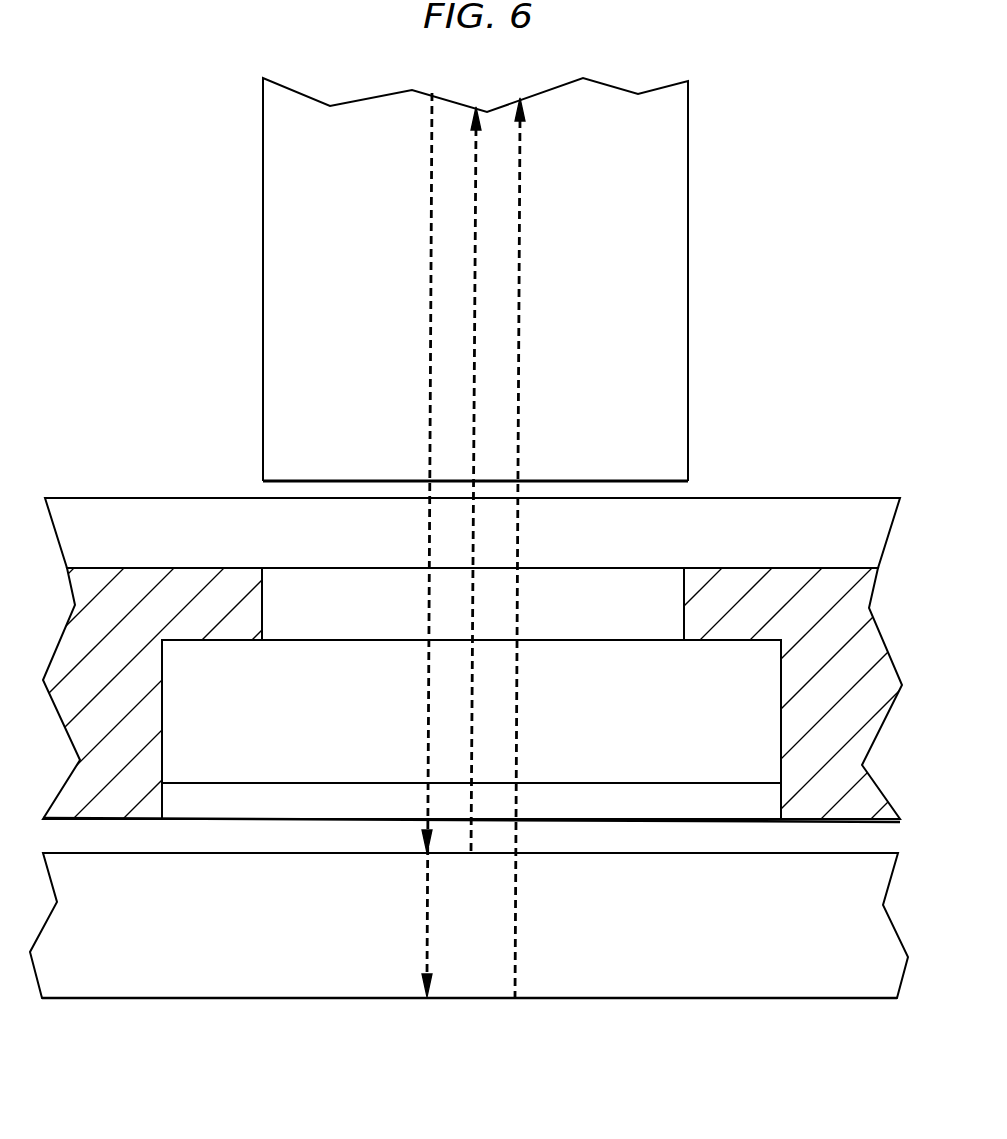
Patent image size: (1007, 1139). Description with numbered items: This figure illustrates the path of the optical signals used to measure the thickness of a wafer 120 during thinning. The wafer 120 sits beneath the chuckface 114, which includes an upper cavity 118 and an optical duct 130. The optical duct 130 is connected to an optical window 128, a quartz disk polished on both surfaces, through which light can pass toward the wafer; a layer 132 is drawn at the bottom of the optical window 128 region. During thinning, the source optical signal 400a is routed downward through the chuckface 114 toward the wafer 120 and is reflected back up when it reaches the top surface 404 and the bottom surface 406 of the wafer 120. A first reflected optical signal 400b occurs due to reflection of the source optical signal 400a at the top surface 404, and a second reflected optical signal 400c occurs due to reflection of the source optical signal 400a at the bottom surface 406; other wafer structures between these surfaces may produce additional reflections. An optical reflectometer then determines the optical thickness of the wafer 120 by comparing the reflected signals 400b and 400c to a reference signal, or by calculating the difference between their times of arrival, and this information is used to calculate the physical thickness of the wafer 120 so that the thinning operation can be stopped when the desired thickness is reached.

The chuckface 114 is at (142, 577).
The upper cavity 118 is at (768, 508).
The wafer 120 is at (750, 990).
The optical window 128 is at (625, 655).
The optical duct 130 is at (305, 583).
The reflective layer 132 is at (625, 800).
The source optical signal 400a is at (430, 358).
The first reflected optical signal 400b is at (475, 279).
The second reflected optical signal 400c is at (519, 418).
The top surface of the wafer 404 is at (205, 855).
The bottom surface of the wafer 406 is at (297, 999).